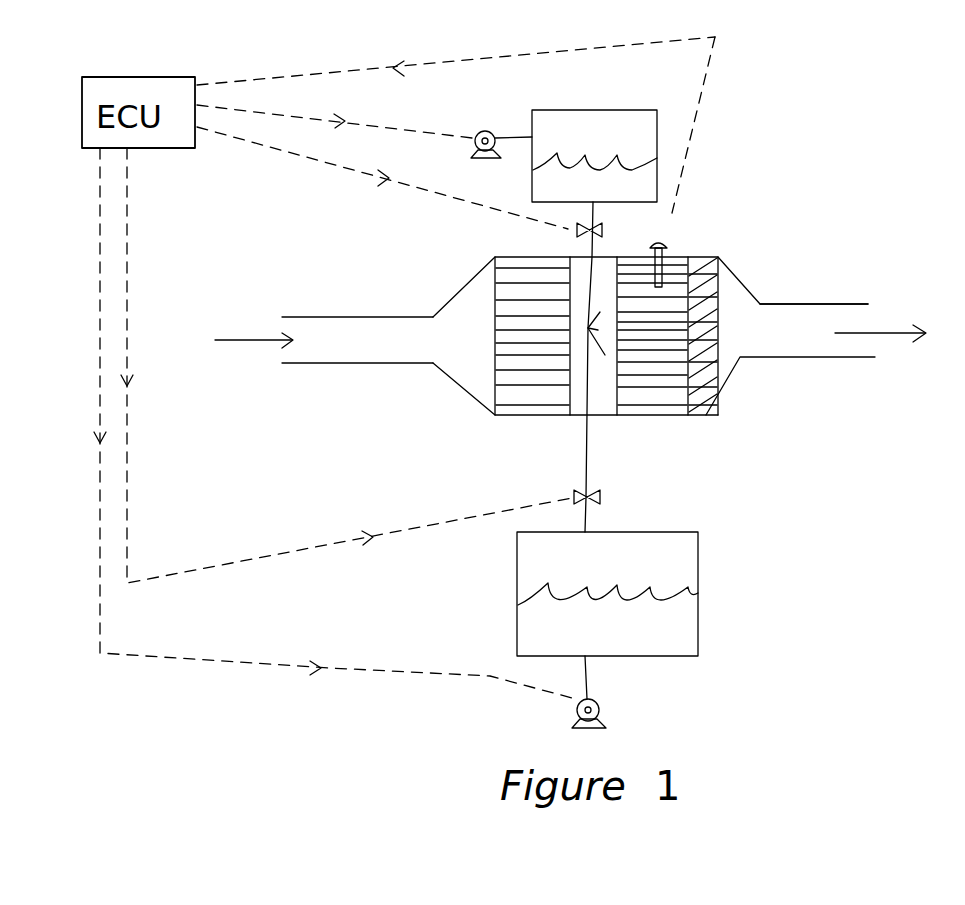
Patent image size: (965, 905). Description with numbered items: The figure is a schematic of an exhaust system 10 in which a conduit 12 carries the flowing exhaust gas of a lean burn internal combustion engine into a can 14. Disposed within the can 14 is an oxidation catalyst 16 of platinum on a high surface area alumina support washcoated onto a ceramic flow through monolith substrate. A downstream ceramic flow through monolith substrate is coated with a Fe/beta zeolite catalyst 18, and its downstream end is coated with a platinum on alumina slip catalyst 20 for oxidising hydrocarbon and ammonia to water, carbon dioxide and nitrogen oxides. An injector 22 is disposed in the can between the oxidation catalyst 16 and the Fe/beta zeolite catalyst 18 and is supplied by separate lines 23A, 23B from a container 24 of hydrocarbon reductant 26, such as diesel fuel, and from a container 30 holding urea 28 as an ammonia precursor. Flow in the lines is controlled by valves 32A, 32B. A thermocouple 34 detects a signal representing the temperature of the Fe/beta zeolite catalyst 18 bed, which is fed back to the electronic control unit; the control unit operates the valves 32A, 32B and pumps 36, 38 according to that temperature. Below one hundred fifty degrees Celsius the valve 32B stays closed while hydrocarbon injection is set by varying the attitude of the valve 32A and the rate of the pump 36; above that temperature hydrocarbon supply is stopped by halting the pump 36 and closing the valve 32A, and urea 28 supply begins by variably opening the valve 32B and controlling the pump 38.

The exhaust system 10 is at (758, 197).
The conduit 12 is at (343, 363).
The can 14 is at (465, 283).
The oxidation catalyst 16 is at (527, 403).
The Fe/beta zeolite catalyst 18 is at (663, 415).
The slip catalyst 20 is at (705, 255).
The injector 22 is at (605, 358).
The line 23A is at (593, 267).
The line 23B is at (587, 392).
The container 24 is at (655, 110).
The hydrocarbon reductant 26 is at (605, 200).
The urea 28 is at (608, 640).
The container 30 is at (700, 574).
The valve 32A is at (572, 232).
The valve 32B is at (605, 498).
The thermocouple 34 is at (660, 273).
The pump 36 is at (482, 130).
The pump 38 is at (600, 710).